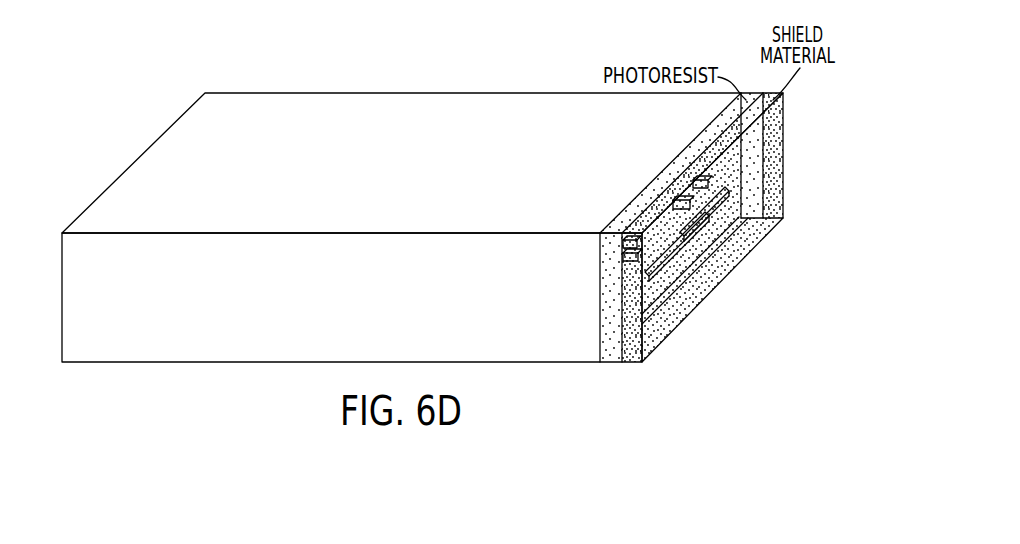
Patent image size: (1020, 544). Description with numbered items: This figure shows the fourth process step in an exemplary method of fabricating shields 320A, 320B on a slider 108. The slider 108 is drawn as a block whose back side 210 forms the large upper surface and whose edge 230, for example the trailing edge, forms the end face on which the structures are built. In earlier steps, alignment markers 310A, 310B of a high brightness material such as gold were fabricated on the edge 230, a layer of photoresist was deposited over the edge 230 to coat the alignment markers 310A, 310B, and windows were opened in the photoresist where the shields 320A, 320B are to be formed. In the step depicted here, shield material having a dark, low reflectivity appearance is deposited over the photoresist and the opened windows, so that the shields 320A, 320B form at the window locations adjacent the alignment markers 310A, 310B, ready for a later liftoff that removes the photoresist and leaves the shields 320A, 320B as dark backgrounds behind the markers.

The slider 108 is at (166, 352).
The back side 210 is at (153, 160).
The edge 230 is at (648, 300).
The alignment marker 310A is at (635, 243).
The alignment marker 310B is at (687, 197).
The shield 320A is at (652, 263).
The shield 320B is at (705, 212).